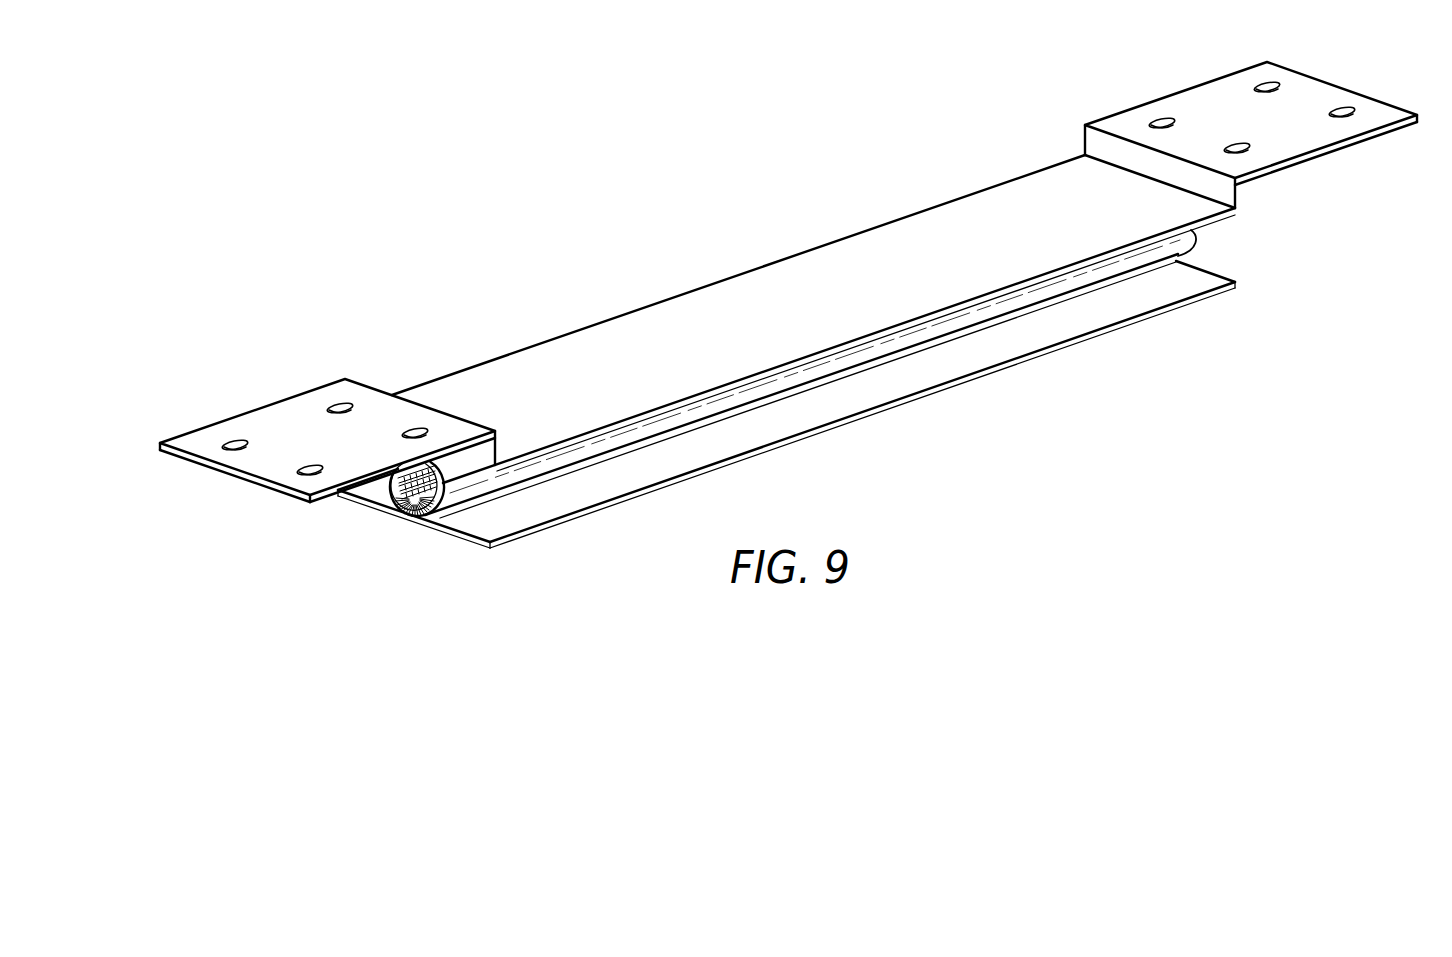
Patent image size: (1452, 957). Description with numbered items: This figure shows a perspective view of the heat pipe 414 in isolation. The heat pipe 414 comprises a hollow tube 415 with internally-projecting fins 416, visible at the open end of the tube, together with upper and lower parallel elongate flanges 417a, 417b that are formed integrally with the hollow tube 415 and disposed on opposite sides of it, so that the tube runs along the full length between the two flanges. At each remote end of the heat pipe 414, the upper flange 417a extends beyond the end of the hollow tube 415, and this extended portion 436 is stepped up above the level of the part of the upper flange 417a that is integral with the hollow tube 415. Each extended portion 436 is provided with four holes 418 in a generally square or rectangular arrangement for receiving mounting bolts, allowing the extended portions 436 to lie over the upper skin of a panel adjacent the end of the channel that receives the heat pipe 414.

The heat pipe 414 is at (650, 242).
The hollow tube 415 is at (488, 485).
The internally-projecting fins 416 is at (418, 515).
The upper flange 417a is at (866, 240).
The lower flange 417b is at (958, 372).
The holes 418 is at (403, 433).
The extended portion 436 is at (266, 417).